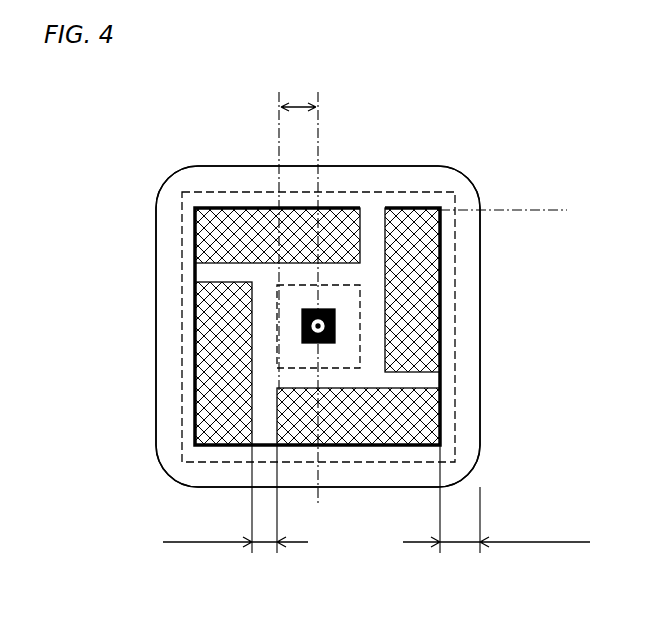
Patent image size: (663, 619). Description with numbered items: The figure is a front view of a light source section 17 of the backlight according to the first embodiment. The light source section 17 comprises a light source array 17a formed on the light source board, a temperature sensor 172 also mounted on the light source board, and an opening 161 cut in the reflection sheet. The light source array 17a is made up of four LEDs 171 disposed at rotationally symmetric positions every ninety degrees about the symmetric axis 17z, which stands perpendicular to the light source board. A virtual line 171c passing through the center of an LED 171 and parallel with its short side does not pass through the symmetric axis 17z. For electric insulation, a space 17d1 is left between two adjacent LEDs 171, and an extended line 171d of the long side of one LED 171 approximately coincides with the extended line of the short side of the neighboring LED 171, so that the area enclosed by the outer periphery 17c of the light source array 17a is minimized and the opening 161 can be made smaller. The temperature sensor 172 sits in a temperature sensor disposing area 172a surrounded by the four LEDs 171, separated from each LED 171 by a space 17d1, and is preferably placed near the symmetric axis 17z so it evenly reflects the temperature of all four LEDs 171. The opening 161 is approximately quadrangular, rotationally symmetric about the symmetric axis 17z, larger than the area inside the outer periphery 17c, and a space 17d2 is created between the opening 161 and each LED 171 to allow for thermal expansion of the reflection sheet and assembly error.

The light source section 17 is at (135, 150).
The light source array 17a is at (182, 232).
The outer periphery of the light source array 17c is at (440, 380).
The symmetric axis 17z is at (302, 340).
The opening 161 is at (480, 420).
The LED 171 is at (440, 285).
The virtual line 171c is at (279, 128).
The extended line 171d is at (498, 210).
The temperature sensor 172 is at (302, 322).
The temperature sensor disposing area 172a is at (276, 330).
The space 17d1 is at (235, 499).
The space 17d2 is at (496, 499).